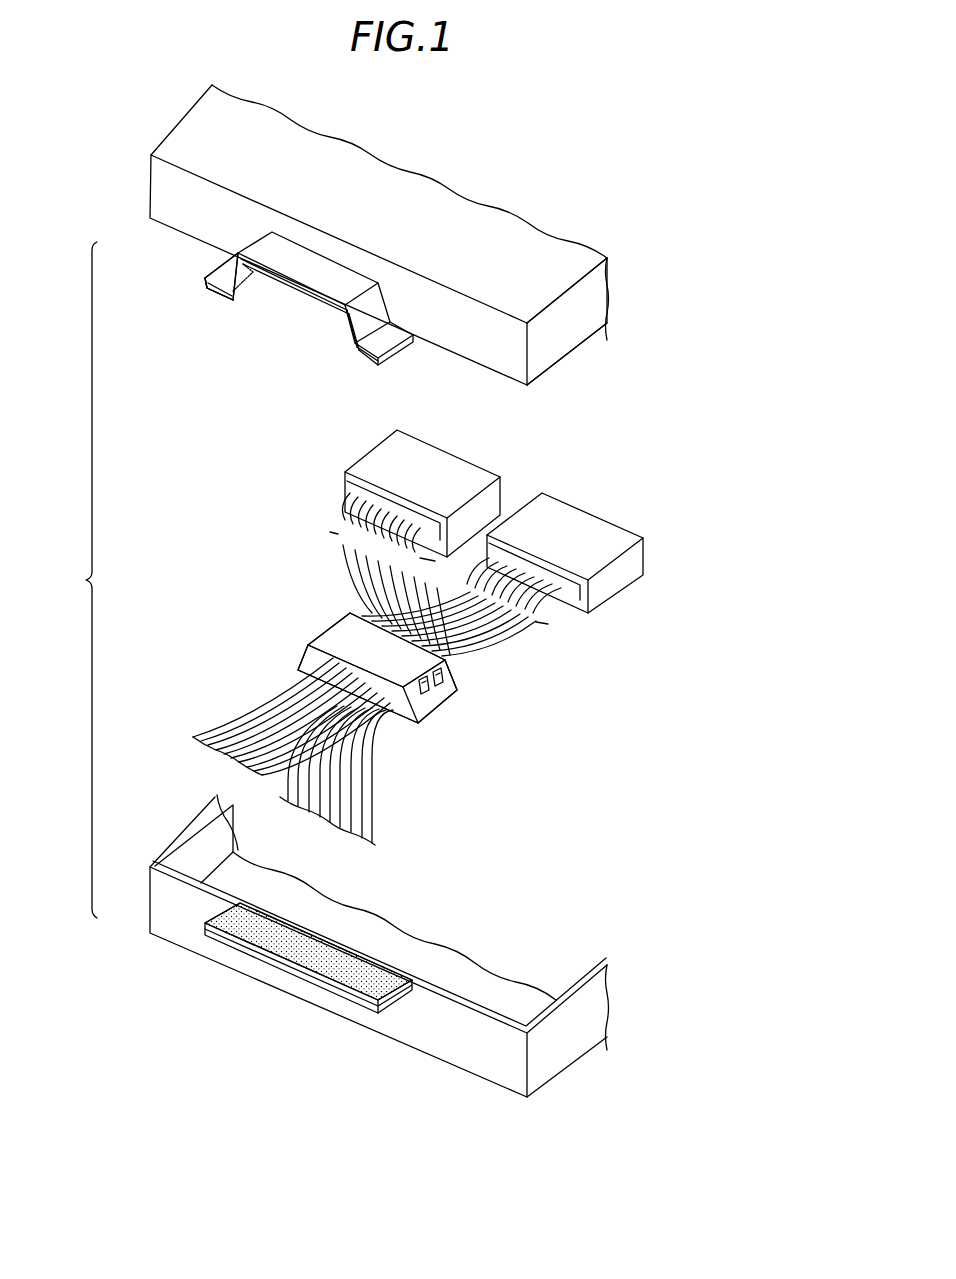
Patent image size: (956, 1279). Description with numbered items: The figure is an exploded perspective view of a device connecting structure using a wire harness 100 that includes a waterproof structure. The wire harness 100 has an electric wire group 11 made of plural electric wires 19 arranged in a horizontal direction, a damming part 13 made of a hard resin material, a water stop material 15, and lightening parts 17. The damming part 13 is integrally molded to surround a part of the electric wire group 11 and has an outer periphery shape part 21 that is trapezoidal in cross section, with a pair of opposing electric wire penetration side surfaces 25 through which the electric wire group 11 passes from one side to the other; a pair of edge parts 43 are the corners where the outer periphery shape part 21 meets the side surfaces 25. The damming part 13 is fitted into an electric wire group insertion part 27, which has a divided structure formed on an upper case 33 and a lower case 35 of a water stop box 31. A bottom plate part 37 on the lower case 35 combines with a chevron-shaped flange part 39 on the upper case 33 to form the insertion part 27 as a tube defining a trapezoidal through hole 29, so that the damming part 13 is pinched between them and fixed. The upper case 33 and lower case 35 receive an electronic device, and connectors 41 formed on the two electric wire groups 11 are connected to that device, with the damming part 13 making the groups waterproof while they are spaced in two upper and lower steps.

The wire harness 100 is at (256, 559).
The electric wire group 11 is at (343, 555).
The damming part 13 is at (368, 672).
The water stop material 15 is at (226, 290).
The lightening parts 17 is at (433, 690).
The electric wires 19 is at (290, 700).
The outer periphery shape part 21 is at (347, 627).
The electric wire penetration side surfaces 25 is at (404, 713).
The electric wire group insertion part 27 is at (77, 580).
The trapezoidal through hole 29 is at (320, 322).
The water stop box 31 is at (491, 221).
The upper case 33 is at (553, 348).
The lower case 35 is at (403, 1027).
The bottom plate part 37 is at (257, 958).
The chevron-shaped flange part 39 is at (225, 270).
The connectors 41 is at (415, 450).
The edge parts 43 is at (478, 690).